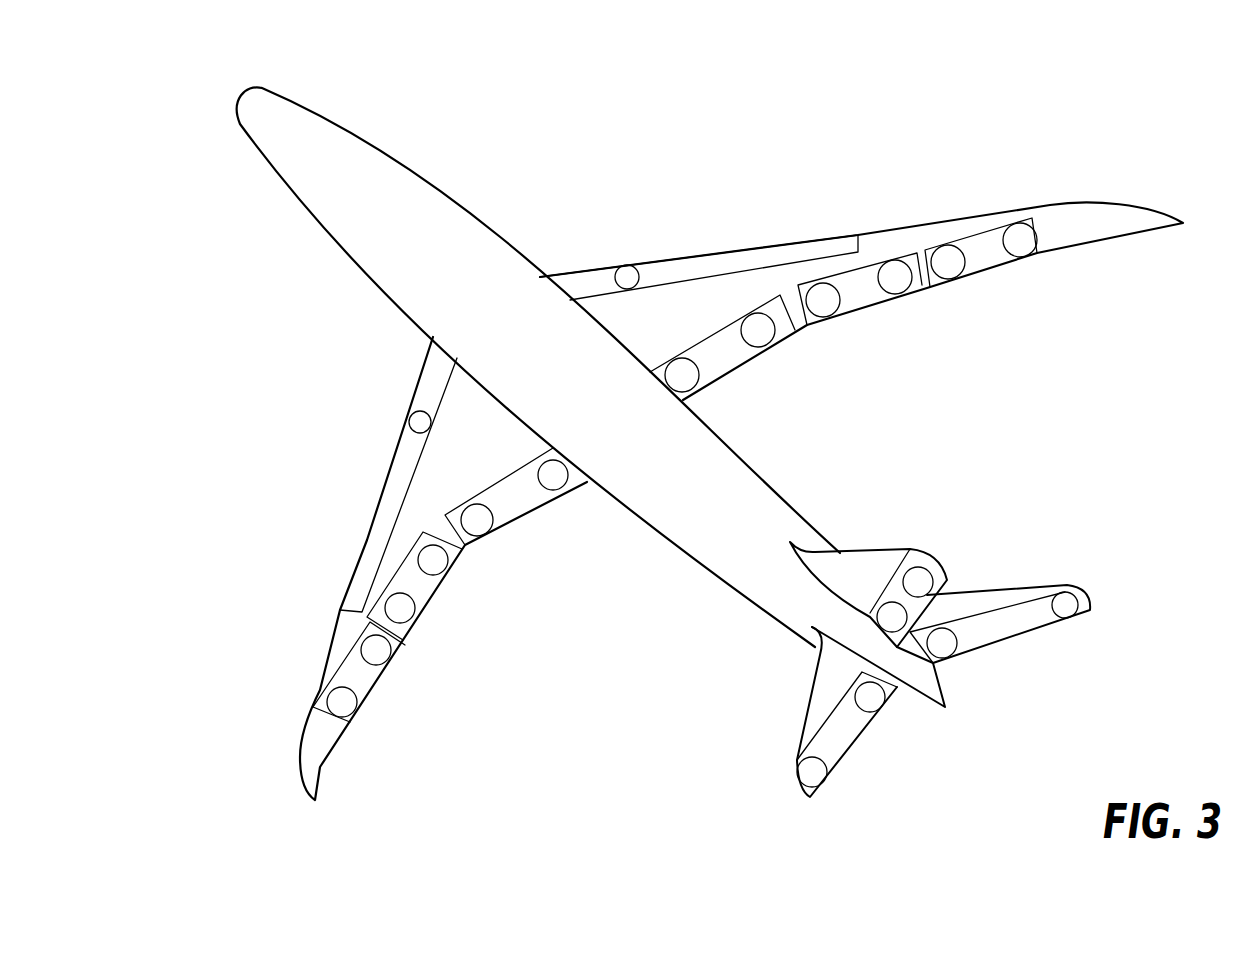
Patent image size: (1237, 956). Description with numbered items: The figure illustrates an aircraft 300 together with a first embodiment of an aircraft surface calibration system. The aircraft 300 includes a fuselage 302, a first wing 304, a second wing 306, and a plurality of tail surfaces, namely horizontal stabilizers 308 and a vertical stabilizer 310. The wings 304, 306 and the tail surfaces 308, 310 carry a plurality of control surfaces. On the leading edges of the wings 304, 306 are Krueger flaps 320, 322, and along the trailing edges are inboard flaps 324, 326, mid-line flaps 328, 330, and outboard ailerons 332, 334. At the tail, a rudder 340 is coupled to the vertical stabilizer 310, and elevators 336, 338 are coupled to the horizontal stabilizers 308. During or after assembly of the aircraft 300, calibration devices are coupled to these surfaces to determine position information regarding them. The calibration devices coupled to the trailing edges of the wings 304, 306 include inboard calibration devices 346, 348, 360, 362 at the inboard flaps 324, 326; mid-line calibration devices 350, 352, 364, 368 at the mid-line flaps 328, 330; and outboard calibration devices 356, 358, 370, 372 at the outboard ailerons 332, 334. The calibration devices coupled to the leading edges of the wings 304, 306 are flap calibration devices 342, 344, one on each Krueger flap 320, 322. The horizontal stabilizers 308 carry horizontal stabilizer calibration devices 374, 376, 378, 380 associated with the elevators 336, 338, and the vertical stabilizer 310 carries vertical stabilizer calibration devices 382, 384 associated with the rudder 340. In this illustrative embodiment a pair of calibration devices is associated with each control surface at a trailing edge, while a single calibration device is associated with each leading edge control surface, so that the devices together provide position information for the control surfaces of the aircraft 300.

The aircraft 300 is at (538, 123).
The fuselage 302 is at (256, 147).
The first wing 304 is at (292, 460).
The second wing 306 is at (797, 196).
The horizontal stabilizers 308 is at (970, 760).
The vertical stabilizer 310 is at (908, 513).
The Krueger flap 320 is at (367, 536).
The Krueger flap 322 is at (753, 250).
The inboard flap 324 is at (518, 471).
The inboard flap 326 is at (707, 336).
The mid-line flap 328 is at (378, 594).
The mid-line flap 330 is at (890, 258).
The outboard aileron 332 is at (330, 676).
The outboard aileron 334 is at (1007, 225).
The elevator 336 is at (823, 727).
The elevator 338 is at (1043, 595).
The rudder 340 is at (937, 566).
The flap calibration device 342 is at (412, 414).
The flap calibration device 344 is at (616, 270).
The inboard calibration device 346 is at (557, 494).
The inboard calibration device 348 is at (486, 533).
The mid-line calibration device 350 is at (452, 571).
The mid-line calibration device 352 is at (416, 617).
The outboard calibration device 356 is at (389, 661).
The outboard calibration device 358 is at (355, 713).
The inboard calibration device 360 is at (691, 391).
The inboard calibration device 362 is at (767, 347).
The mid-line calibration device 364 is at (829, 317).
The mid-line calibration device 368 is at (903, 294).
The outboard calibration device 370 is at (956, 279).
The outboard calibration device 372 is at (1031, 258).
The horizontal stabilizer calibration device 374 is at (879, 709).
The horizontal stabilizer calibration device 376 is at (824, 782).
The horizontal stabilizer calibration device 378 is at (951, 656).
The horizontal stabilizer calibration device 380 is at (1074, 613).
The vertical stabilizer calibration device 382 is at (907, 566).
The vertical stabilizer calibration device 384 is at (837, 593).